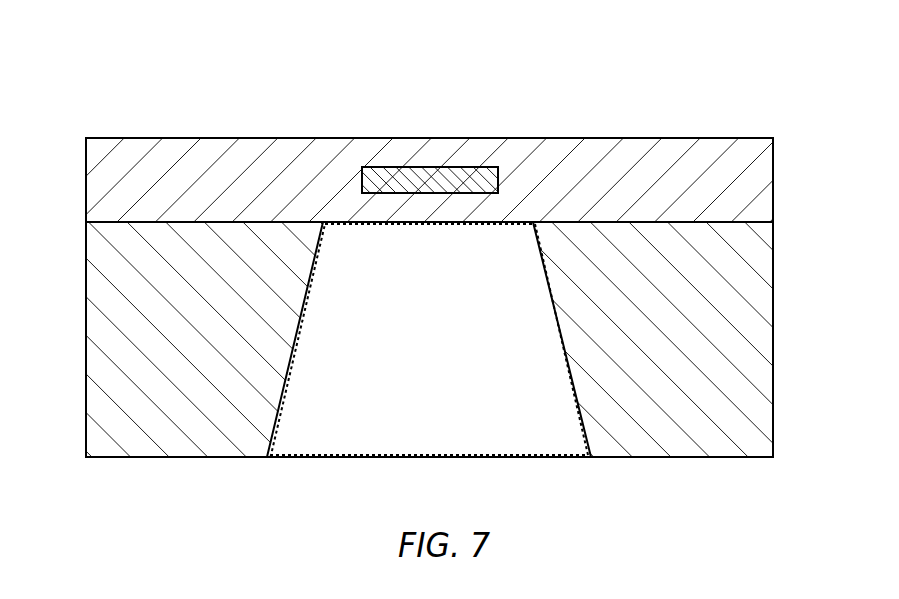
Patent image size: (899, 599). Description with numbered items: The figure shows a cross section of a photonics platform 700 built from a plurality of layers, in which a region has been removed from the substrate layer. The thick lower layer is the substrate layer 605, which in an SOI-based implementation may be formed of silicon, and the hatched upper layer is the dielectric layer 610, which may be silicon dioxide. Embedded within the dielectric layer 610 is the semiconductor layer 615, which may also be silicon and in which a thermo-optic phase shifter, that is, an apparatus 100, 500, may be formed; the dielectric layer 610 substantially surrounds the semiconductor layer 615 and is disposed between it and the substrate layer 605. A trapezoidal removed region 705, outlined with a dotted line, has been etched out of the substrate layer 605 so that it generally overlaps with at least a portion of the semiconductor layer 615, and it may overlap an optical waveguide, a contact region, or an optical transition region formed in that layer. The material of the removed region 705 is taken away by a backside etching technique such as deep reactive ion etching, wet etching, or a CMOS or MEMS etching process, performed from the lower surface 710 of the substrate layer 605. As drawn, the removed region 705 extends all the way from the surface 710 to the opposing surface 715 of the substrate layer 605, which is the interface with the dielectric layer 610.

The photonics platform 700 is at (683, 80).
The dielectric layer 610 is at (773, 172).
The substrate layer 605 is at (773, 342).
The semiconductor layer 615 is at (493, 149).
The apparatus 100 is at (430, 180).
The apparatus 500 is at (430, 167).
The opposing surface 715 is at (251, 222).
The removed region 705 is at (429, 339).
The surface 710 is at (247, 457).